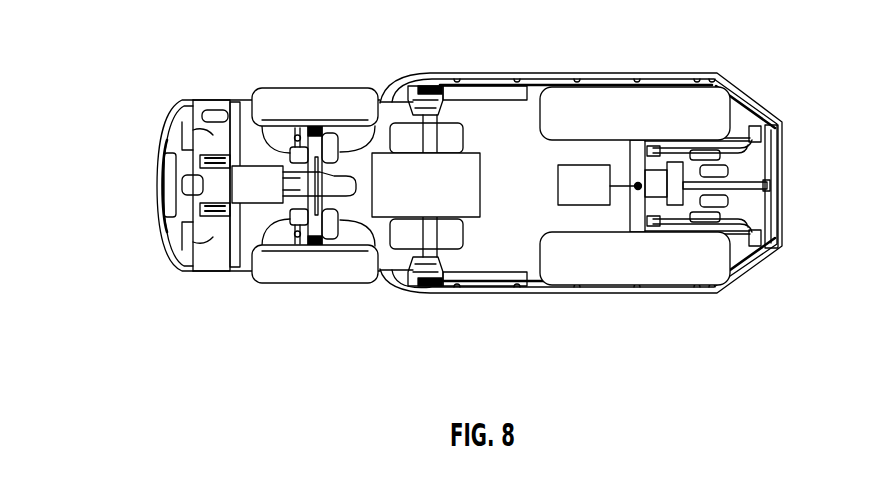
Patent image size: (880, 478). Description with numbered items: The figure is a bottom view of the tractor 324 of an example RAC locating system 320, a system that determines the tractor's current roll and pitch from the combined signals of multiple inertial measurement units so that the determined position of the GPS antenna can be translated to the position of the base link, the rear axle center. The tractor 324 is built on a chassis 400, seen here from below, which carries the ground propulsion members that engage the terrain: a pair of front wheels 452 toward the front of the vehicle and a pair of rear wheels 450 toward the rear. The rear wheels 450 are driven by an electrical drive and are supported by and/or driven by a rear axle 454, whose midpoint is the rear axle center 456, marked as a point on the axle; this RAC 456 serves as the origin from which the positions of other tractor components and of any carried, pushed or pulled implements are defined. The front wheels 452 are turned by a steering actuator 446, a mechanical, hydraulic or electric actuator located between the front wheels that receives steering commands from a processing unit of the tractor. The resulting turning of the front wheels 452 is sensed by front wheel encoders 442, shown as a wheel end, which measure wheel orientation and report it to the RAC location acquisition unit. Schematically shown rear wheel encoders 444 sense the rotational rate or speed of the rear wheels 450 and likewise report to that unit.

The RAC locating system 320 is at (96, 124).
The tractor 324 is at (203, 96).
The front wheel encoders 442 is at (240, 267).
The front wheels 452 is at (330, 103).
The steering actuator 446 is at (433, 273).
The chassis 400 is at (545, 296).
The rear wheel encoders 444 is at (556, 186).
The rear axle 454 is at (617, 228).
The rear wheels 450 is at (661, 100).
The rear axle center (RAC) 456 is at (638, 186).